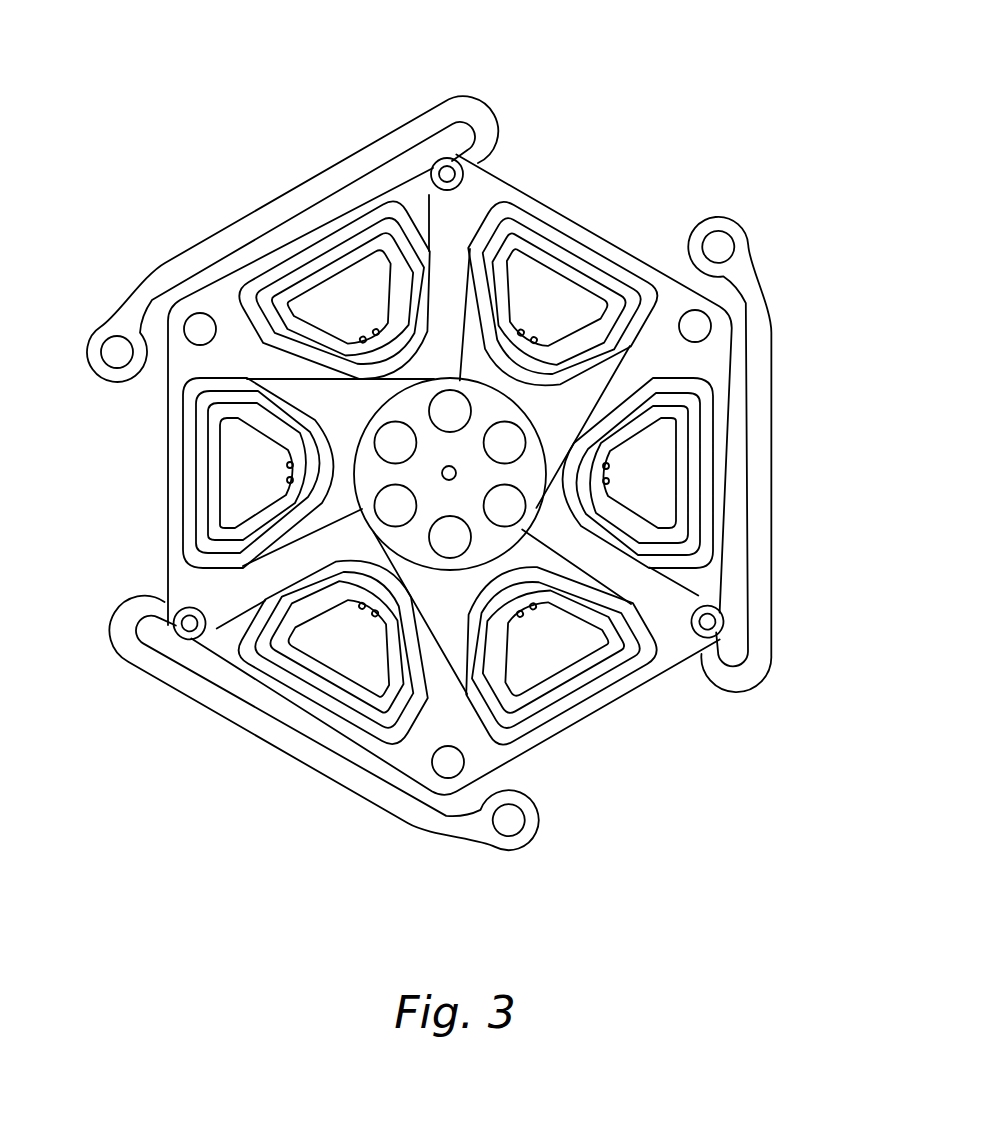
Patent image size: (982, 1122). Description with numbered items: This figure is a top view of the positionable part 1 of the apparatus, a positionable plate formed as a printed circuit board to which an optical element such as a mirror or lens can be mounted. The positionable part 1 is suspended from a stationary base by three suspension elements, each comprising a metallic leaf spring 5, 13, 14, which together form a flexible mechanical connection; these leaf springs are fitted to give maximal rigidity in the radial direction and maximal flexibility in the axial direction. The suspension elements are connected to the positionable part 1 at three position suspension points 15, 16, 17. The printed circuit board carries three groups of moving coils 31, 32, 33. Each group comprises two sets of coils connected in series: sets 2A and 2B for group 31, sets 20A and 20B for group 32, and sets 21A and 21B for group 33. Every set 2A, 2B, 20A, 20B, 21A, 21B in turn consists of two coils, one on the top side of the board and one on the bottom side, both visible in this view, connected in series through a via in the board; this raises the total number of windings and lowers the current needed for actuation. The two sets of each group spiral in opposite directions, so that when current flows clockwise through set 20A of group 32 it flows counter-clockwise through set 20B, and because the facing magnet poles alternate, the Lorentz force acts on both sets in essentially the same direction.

The positionable part 1 is at (495, 195).
The set of coils 2A is at (615, 267).
The set of coils 2B is at (710, 455).
The metallic leaf spring 5 is at (763, 522).
The metallic leaf spring 13 is at (143, 660).
The metallic leaf spring 14 is at (288, 205).
The position suspension point 15 is at (712, 622).
The position suspension point 16 is at (188, 623).
The position suspension point 17 is at (447, 172).
The set of coils 20A is at (553, 712).
The set of coils 20B is at (350, 712).
The set of coils 21A is at (198, 489).
The set of coils 21B is at (268, 297).
The group of moving coils 31 is at (815, 213).
The group of moving coils 32 is at (328, 888).
The group of moving coils 33 is at (80, 258).